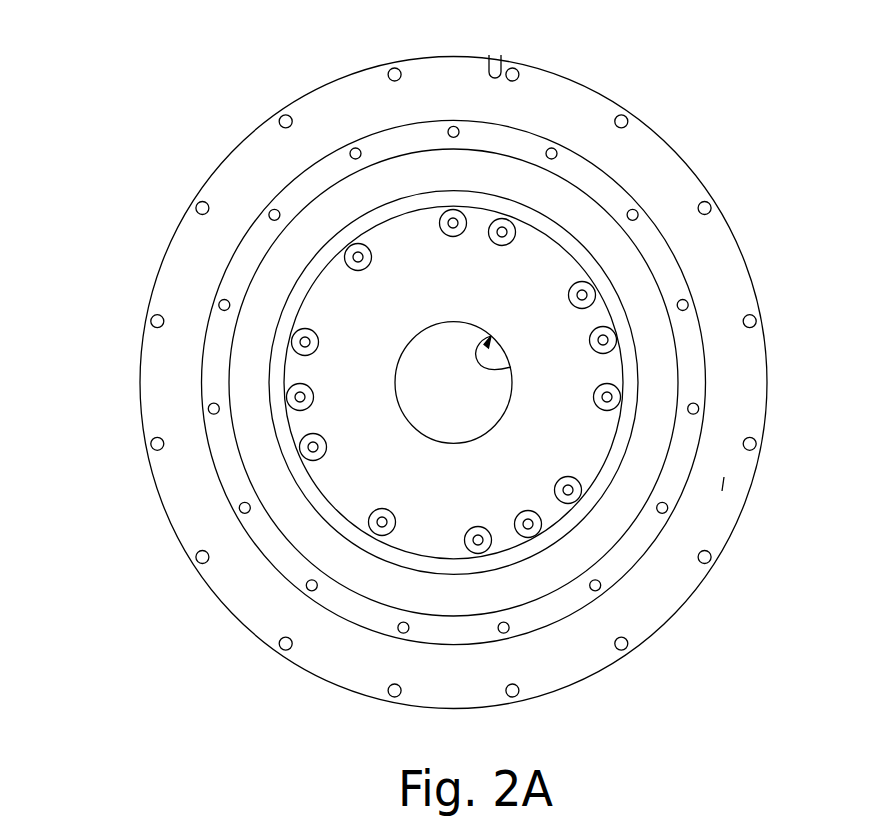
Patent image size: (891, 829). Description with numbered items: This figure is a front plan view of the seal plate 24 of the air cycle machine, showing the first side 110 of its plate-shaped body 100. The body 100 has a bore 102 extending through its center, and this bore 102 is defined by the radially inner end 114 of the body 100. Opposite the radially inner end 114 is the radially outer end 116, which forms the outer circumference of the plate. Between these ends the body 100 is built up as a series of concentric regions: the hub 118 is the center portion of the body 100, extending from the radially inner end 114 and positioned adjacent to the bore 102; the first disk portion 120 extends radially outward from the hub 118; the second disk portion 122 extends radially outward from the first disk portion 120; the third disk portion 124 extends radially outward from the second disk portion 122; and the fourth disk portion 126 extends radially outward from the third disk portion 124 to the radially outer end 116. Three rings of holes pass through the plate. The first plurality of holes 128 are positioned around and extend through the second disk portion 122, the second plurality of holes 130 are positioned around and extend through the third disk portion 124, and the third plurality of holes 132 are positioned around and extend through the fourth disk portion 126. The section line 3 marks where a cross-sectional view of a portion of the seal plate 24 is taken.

The seal plate 24 is at (93, 123).
The body 100 is at (735, 360).
The bore 102 is at (453, 383).
The first side 110 is at (728, 482).
The radially inner end 114 is at (511, 367).
The radially outer end 116 is at (727, 207).
The hub 118 is at (491, 437).
The first disk portion 120 is at (520, 285).
The second disk portion 122 is at (415, 235).
The third disk portion 124 is at (520, 138).
The fourth disk portion 126 is at (647, 153).
The first plurality of holes 128 is at (606, 341).
The second plurality of holes 130 is at (699, 408).
The third plurality of holes 132 is at (711, 558).
The line 3- 3 is at (455, 406).